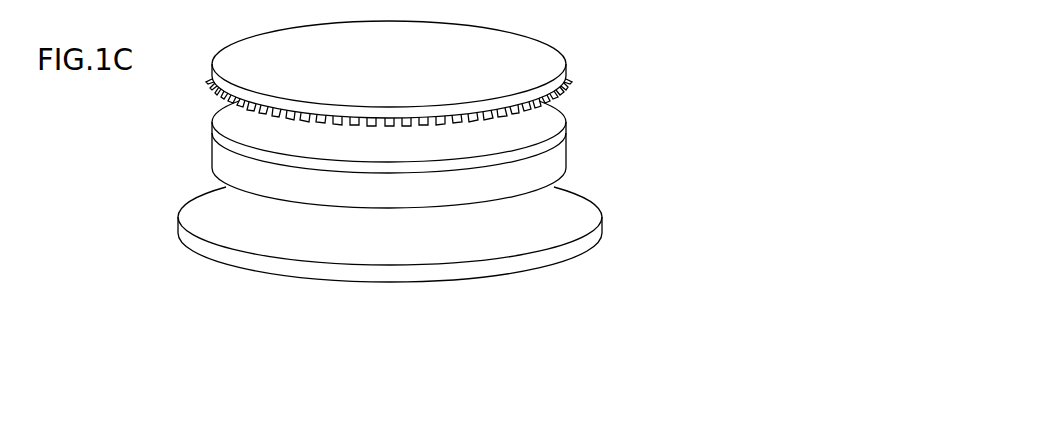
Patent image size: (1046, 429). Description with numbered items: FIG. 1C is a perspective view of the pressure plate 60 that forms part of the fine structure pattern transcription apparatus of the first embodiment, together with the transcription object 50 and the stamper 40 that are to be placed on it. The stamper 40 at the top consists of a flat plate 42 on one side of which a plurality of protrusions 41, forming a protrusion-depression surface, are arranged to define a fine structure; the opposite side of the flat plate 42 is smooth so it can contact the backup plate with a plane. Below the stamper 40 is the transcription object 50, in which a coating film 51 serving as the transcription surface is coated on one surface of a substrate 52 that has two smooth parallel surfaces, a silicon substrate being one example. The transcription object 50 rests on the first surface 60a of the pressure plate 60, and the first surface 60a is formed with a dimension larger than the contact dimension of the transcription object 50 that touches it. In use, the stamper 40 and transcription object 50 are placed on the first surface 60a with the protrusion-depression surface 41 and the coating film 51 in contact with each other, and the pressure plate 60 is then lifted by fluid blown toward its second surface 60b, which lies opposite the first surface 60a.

The stamper 40 is at (535, 74).
The protrusion-depression surface 41 is at (571, 99).
The flat plate 42 is at (566, 68).
The transcription object 50 is at (564, 205).
The coating film 51 is at (565, 117).
The substrate 52 is at (566, 165).
The pressure plate 60 is at (527, 292).
The first surface 60a is at (423, 243).
The second surface 60b is at (402, 284).